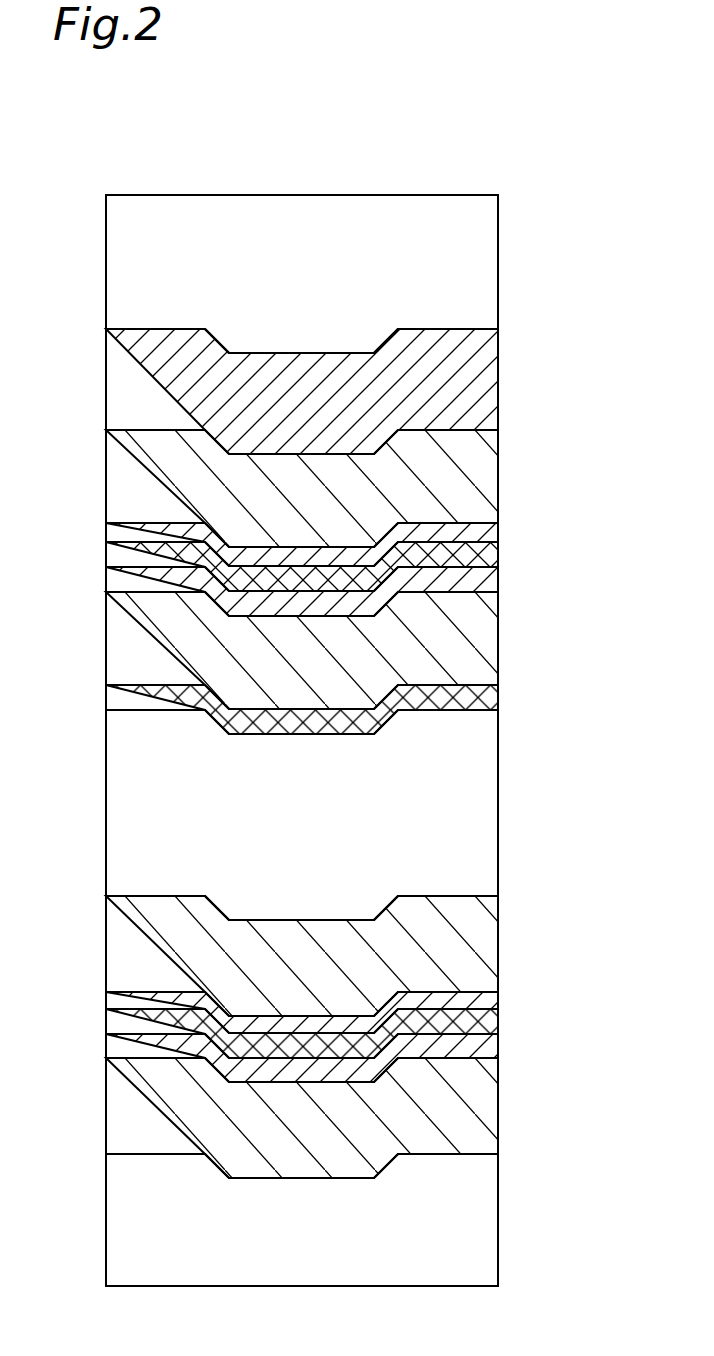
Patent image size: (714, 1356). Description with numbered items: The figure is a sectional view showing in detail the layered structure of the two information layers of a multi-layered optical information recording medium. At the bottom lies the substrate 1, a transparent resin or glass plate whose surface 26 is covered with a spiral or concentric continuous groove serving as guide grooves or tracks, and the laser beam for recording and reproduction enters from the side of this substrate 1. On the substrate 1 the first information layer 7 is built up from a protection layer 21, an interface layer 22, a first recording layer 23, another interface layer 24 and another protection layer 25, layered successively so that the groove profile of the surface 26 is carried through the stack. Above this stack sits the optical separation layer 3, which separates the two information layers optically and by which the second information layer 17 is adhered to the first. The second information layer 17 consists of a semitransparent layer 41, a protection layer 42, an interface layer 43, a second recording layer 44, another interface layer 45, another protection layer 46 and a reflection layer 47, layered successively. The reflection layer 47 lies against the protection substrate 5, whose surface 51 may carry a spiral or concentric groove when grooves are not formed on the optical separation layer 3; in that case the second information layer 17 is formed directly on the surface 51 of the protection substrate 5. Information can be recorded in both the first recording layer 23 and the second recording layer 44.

The substrate 1 is at (496, 1226).
The optical separation layer 3 is at (496, 806).
The protection substrate 5 is at (496, 266).
The lower magnetoresistive element stack 7 is at (371, 1037).
The upper magnetoresistive element stack 17 is at (379, 531).
The protection layer 21 is at (337, 1118).
The interface layer 22 is at (496, 1057).
The first recording layer 23 is at (496, 1029).
The interface layer 24 is at (496, 1002).
The protection layer 25 is at (496, 944).
The surface of the substrate 26 is at (298, 921).
The semitransparent layer 41 is at (337, 705).
The protection layer 42 is at (496, 639).
The interface layer 43 is at (496, 589).
The second recording layer 44 is at (496, 560).
The interface layer 45 is at (496, 534).
The protection layer 46 is at (496, 476).
The reflection layer 47 is at (496, 386).
The surface of the protection substrate 51 is at (298, 353).